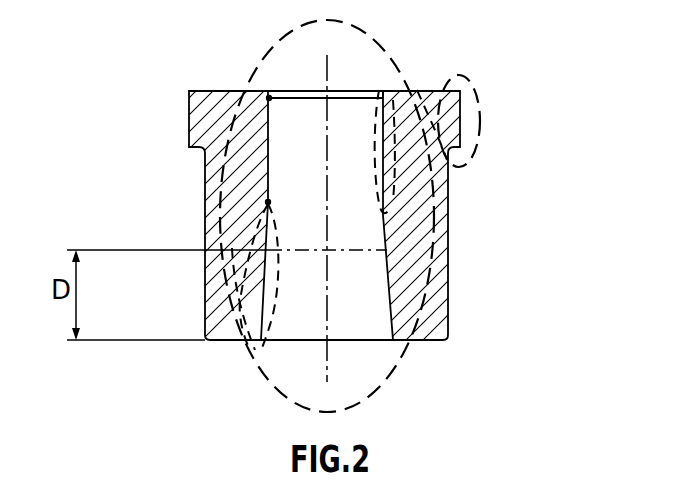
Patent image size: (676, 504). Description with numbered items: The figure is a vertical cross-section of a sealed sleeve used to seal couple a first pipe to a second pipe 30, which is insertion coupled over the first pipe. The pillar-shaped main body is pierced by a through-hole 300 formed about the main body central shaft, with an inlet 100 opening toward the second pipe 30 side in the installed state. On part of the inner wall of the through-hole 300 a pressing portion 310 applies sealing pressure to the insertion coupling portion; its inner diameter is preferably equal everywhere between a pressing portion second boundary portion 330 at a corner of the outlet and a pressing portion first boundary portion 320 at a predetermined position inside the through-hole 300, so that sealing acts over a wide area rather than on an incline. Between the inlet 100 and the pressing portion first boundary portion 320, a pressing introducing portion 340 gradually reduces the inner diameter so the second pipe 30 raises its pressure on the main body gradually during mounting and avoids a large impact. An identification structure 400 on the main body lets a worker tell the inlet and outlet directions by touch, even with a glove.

The second pipe 30 is at (387, 323).
The inlet 100 is at (289, 342).
The through-hole 300 is at (378, 383).
The pressing portion 310 is at (383, 93).
The pressing portion first boundary portion 320 is at (269, 98).
The pressing portion second boundary portion 330 is at (268, 202).
The pressing introducing portion 340 is at (242, 340).
The identification structure 400 is at (480, 112).